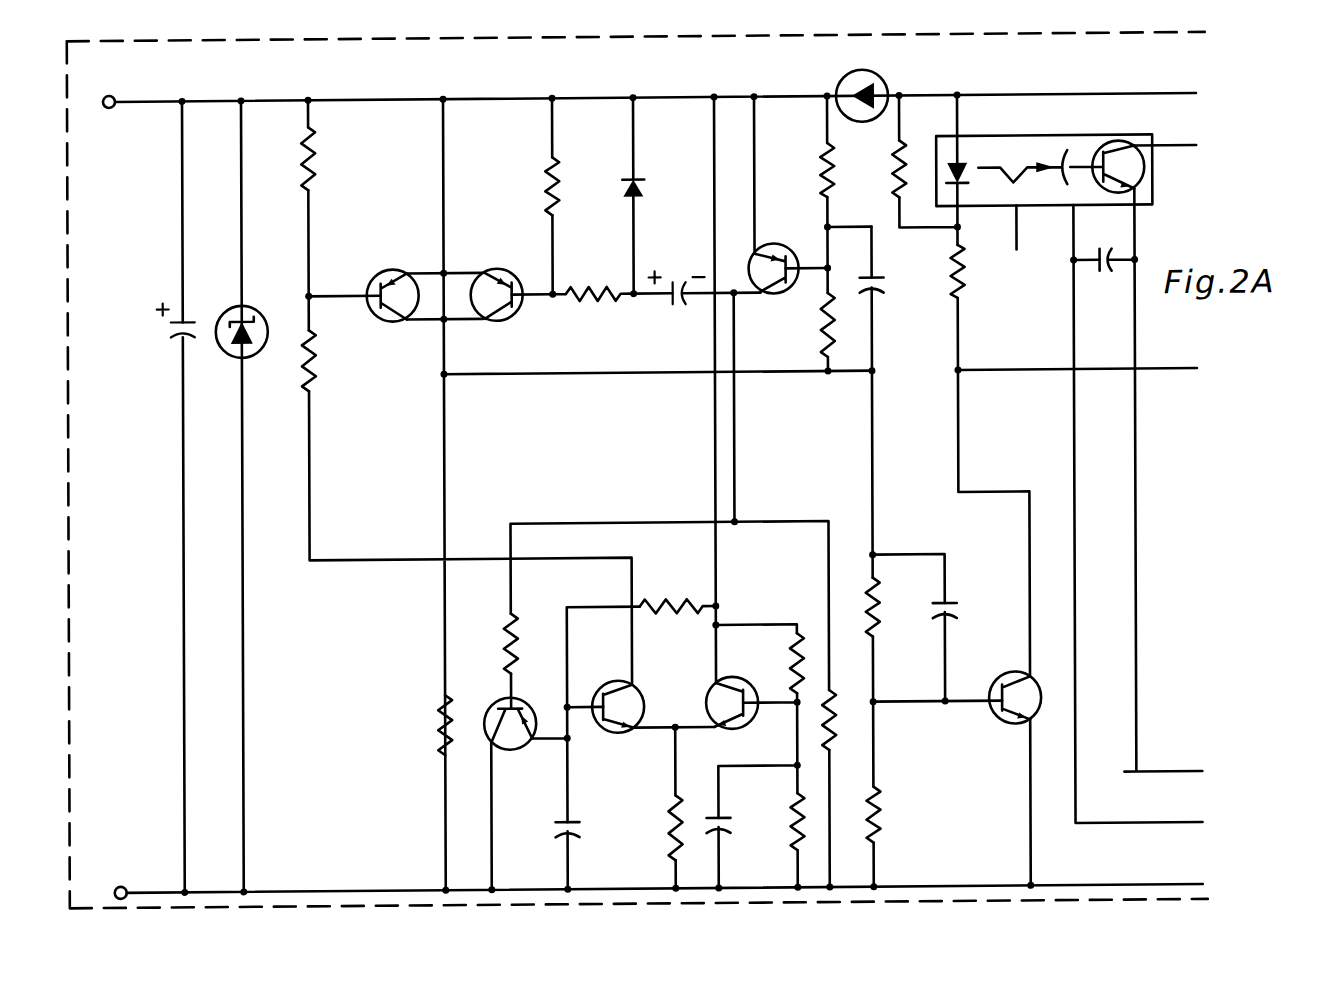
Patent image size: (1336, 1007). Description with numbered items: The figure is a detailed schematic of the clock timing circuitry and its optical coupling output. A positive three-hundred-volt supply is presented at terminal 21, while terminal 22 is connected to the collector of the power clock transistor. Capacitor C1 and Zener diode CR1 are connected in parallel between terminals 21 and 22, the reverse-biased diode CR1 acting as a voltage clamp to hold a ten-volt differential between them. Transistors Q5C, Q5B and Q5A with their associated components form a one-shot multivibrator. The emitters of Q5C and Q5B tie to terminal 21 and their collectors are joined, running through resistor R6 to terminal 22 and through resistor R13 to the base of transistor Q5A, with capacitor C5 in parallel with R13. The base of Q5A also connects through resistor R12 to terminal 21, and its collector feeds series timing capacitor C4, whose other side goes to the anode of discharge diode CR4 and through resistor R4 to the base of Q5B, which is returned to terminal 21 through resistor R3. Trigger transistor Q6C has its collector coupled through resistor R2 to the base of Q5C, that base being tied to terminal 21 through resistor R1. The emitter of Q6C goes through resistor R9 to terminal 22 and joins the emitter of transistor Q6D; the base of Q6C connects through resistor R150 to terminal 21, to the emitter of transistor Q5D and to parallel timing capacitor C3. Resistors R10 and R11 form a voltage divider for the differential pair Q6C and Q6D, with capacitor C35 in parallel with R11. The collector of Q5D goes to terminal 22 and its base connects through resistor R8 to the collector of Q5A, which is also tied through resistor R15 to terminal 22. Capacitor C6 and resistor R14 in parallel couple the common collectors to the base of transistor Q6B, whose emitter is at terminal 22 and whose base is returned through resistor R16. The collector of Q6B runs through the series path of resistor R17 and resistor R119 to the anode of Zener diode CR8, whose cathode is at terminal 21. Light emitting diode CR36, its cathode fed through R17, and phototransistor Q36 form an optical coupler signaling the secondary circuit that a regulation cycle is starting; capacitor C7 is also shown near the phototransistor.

The terminal 21 is at (112, 97).
The terminal 22 is at (121, 888).
The resistor R1 is at (291, 158).
The resistor R2 is at (328, 360).
The resistor R3 is at (536, 186).
The resistor R4 is at (593, 309).
The resistor R6 is at (429, 725).
The resistor R8 is at (495, 644).
The resistor R9 is at (658, 827).
The resistor R10 is at (775, 663).
The resistor R11 is at (780, 830).
The resistor R12 is at (804, 170).
The resistor R13 is at (805, 325).
The resistor R14 is at (891, 616).
The resistor R15 is at (848, 730).
The resistor R16 is at (895, 814).
The resistor R17 is at (938, 271).
The resistor R119 is at (878, 180).
The resistor R150 is at (678, 597).
The capacitor C1 is at (163, 320).
The parallel timing capacitor C3 is at (550, 826).
The series timing capacitor C4 is at (677, 300).
The capacitor C5 is at (883, 296).
The capacitor C6 is at (963, 610).
The capacitor C7 is at (1106, 273).
The capacitor C35 is at (735, 814).
The Zener diode CR1 is at (230, 344).
The discharge diode CR4 is at (656, 190).
The Zener diode CR8 is at (880, 90).
The light emitting diode CR36 is at (986, 163).
The transistor Q5A is at (774, 256).
The transistor Q5B is at (497, 284).
The transistor Q5C is at (370, 294).
The transistor Q5D is at (513, 734).
The transistor Q6B is at (1010, 711).
The transistor Q6C is at (618, 721).
The transistor Q6D is at (732, 715).
The phototransistor Q36 is at (1044, 158).